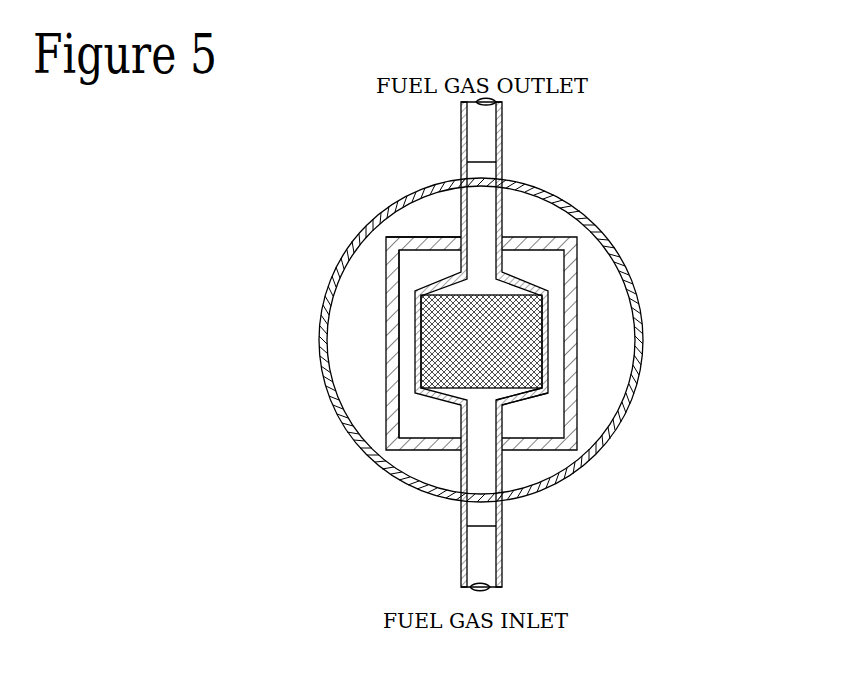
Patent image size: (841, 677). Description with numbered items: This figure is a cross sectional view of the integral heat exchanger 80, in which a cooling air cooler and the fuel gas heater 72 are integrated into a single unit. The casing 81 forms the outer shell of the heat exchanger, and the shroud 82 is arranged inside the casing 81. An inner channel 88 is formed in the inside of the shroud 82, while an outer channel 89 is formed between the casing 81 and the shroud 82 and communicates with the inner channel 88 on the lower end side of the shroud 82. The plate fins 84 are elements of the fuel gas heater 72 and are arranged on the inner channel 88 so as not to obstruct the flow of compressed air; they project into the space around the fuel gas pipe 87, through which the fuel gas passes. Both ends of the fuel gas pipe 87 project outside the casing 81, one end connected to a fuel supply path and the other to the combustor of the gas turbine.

The integral heat exchanger 80 is at (496, 344).
The casing 81 is at (363, 231).
The shroud 82 is at (578, 270).
The inner channel 88 is at (396, 356).
The outer channel 89 is at (417, 231).
The fuel gas pipe 87 is at (460, 470).
The fuel gas heater 72 is at (558, 310).
The plate fins 84 is at (505, 399).